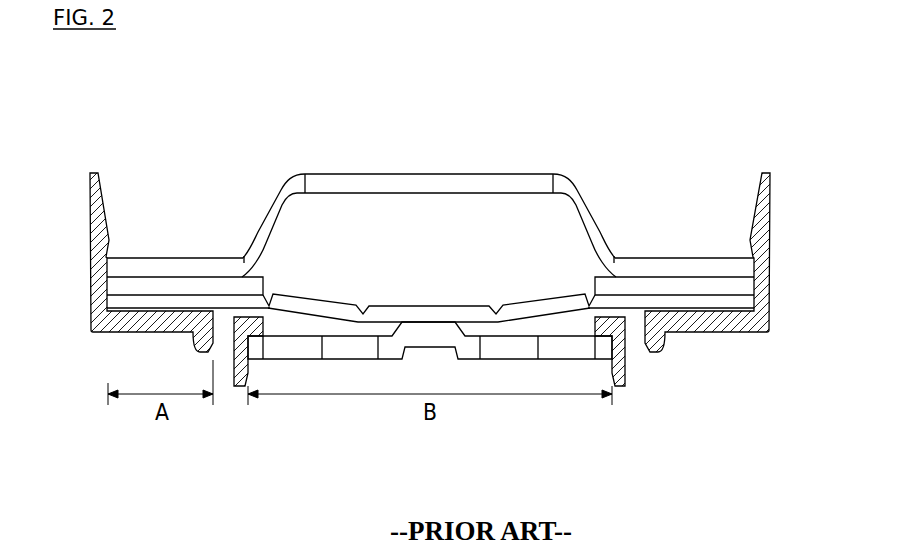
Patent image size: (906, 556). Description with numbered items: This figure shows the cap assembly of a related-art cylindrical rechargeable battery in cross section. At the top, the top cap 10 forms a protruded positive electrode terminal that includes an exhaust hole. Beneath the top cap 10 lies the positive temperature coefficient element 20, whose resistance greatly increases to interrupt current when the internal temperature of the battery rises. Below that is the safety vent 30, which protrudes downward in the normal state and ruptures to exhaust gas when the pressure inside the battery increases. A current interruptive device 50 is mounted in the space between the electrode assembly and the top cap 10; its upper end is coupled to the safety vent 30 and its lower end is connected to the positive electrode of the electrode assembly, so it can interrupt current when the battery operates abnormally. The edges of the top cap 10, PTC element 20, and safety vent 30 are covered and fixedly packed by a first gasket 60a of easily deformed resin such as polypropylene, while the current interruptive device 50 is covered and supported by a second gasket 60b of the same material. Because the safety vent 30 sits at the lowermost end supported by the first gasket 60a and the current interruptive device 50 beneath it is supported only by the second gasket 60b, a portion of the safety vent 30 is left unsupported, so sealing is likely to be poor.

The top cap 10 is at (375, 173).
The positive temperature coefficient (PTC) element 20 is at (651, 276).
The safety vent 30 is at (293, 297).
The current interruptive device (CID) 50 is at (272, 333).
The first gasket 60a is at (93, 172).
The second gasket 60b is at (240, 387).